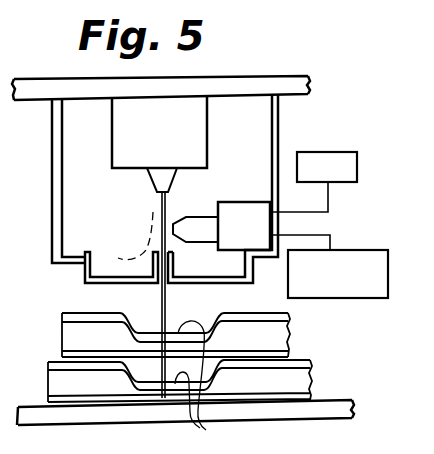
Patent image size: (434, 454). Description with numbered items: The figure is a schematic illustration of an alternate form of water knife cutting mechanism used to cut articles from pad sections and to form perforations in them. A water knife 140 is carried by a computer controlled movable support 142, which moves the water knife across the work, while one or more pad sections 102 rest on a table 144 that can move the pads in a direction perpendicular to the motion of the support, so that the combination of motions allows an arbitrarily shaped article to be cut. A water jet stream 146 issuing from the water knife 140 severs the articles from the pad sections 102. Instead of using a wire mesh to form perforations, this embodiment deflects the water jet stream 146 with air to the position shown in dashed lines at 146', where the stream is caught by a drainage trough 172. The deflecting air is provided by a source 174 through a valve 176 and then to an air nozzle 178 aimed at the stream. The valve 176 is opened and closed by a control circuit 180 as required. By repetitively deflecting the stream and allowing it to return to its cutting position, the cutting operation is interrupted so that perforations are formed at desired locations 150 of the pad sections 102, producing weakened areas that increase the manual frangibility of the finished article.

The support 142 is at (33, 102).
The water knife 140 is at (210, 148).
The water jet stream 146 is at (135, 188).
The deflected water jet stream position 146' is at (125, 236).
The desired locations for perforations 150 is at (206, 323).
The drainage trough 172 is at (85, 271).
The valve 176 is at (240, 201).
The air nozzle 178 is at (193, 216).
The air source 174 is at (321, 151).
The control circuit 180 is at (330, 298).
The pad section 102 is at (47, 392).
The table 144 is at (316, 407).